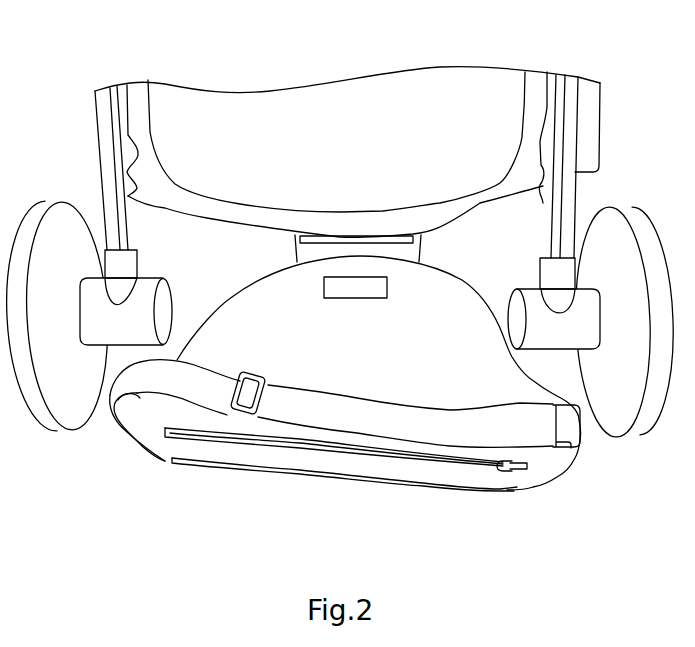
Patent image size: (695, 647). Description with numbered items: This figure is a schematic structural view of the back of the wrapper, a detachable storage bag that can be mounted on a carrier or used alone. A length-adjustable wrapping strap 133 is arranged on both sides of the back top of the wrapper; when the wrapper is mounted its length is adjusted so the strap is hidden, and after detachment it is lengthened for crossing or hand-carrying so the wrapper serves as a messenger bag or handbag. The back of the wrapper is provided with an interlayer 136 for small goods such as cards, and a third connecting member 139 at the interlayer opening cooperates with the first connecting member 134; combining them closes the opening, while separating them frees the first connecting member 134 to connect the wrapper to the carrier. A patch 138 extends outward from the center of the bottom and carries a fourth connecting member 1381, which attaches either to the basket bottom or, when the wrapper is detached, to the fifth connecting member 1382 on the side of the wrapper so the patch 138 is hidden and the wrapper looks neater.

The wrapping strap 133 is at (515, 429).
The first connecting member 134 is at (197, 465).
The interlayer 136 is at (165, 430).
The patch 138 is at (405, 250).
The fourth connecting member 1381 is at (329, 238).
The fifth connecting member 1382 is at (363, 283).
The third connecting member 139 is at (527, 472).